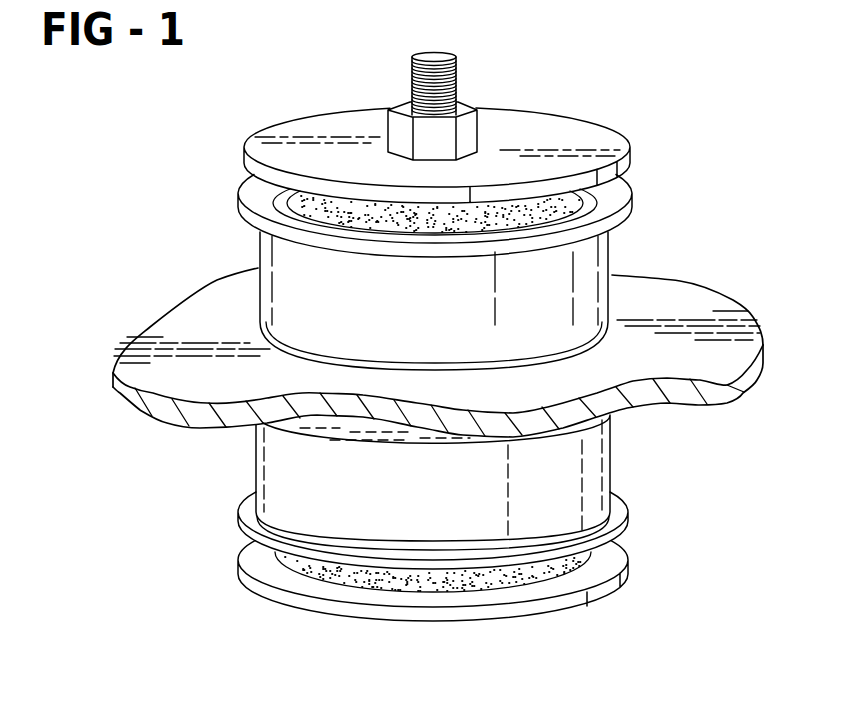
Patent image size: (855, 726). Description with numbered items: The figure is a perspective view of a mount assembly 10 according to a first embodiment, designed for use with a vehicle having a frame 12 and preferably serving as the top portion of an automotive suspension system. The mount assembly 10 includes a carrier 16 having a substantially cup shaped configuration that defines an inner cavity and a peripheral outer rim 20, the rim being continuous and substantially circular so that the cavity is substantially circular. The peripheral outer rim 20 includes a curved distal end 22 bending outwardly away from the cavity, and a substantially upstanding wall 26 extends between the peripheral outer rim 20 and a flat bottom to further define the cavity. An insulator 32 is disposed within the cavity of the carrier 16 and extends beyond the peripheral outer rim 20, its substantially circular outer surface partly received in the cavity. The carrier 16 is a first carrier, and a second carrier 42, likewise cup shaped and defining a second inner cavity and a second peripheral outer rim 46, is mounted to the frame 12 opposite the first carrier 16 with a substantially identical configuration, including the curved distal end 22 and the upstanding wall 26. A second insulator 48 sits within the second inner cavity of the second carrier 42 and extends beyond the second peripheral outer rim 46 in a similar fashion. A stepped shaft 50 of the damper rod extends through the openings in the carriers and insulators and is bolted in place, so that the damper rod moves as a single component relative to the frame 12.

The mount assembly 10 is at (133, 441).
The frame 12 is at (692, 302).
The carrier 16 is at (613, 273).
The peripheral outer rim 20 is at (253, 198).
The curved distal end 22 is at (610, 205).
The upstanding wall 26 is at (300, 287).
The insulator 32 is at (523, 207).
The second carrier 42 is at (570, 492).
The second peripheral outer rim 46 is at (630, 547).
The second insulator 48 is at (497, 587).
The stepped shaft 50 is at (457, 80).